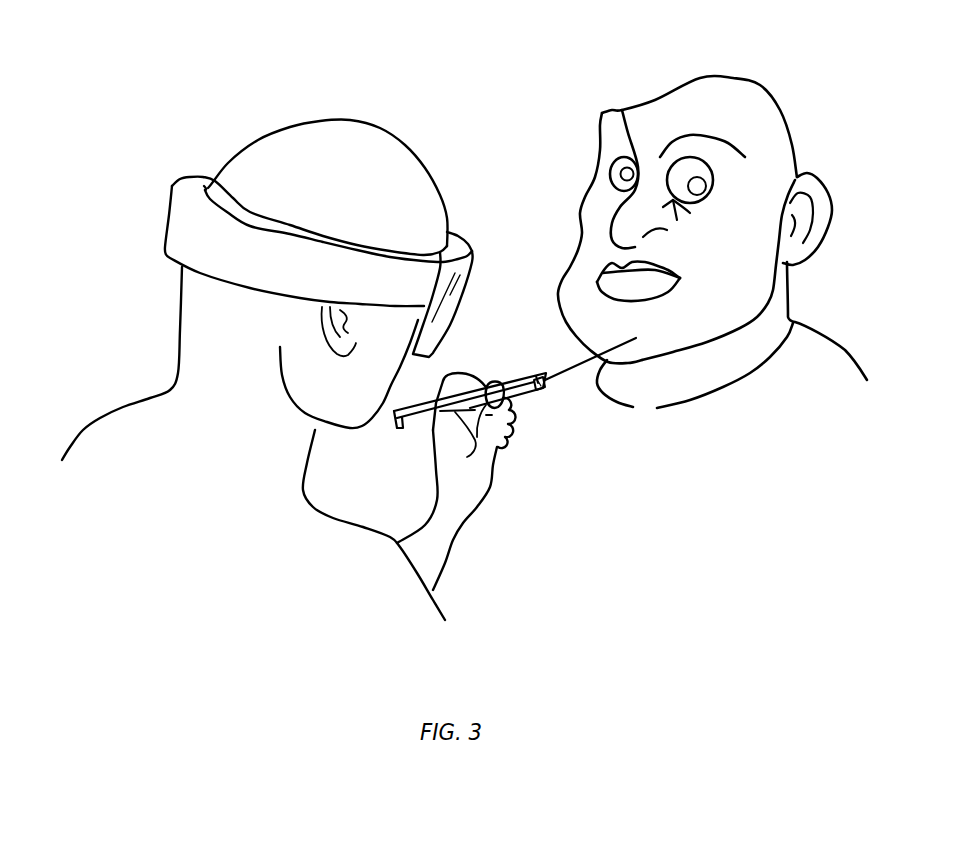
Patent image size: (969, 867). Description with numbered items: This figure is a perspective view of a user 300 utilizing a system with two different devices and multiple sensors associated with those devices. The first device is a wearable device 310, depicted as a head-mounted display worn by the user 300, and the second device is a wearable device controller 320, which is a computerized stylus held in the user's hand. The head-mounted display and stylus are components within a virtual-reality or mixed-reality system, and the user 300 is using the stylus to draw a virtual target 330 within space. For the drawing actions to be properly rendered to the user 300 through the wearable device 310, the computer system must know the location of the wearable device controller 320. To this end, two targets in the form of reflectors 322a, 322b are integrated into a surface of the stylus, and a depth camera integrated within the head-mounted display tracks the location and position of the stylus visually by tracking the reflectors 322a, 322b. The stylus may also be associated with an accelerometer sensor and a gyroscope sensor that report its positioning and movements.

The user 300 is at (348, 120).
The wearable device 310 is at (472, 245).
The wearable device controller 320 is at (477, 437).
The reflector 322a is at (545, 383).
The reflector 322b is at (537, 377).
The virtual target 330 is at (710, 76).